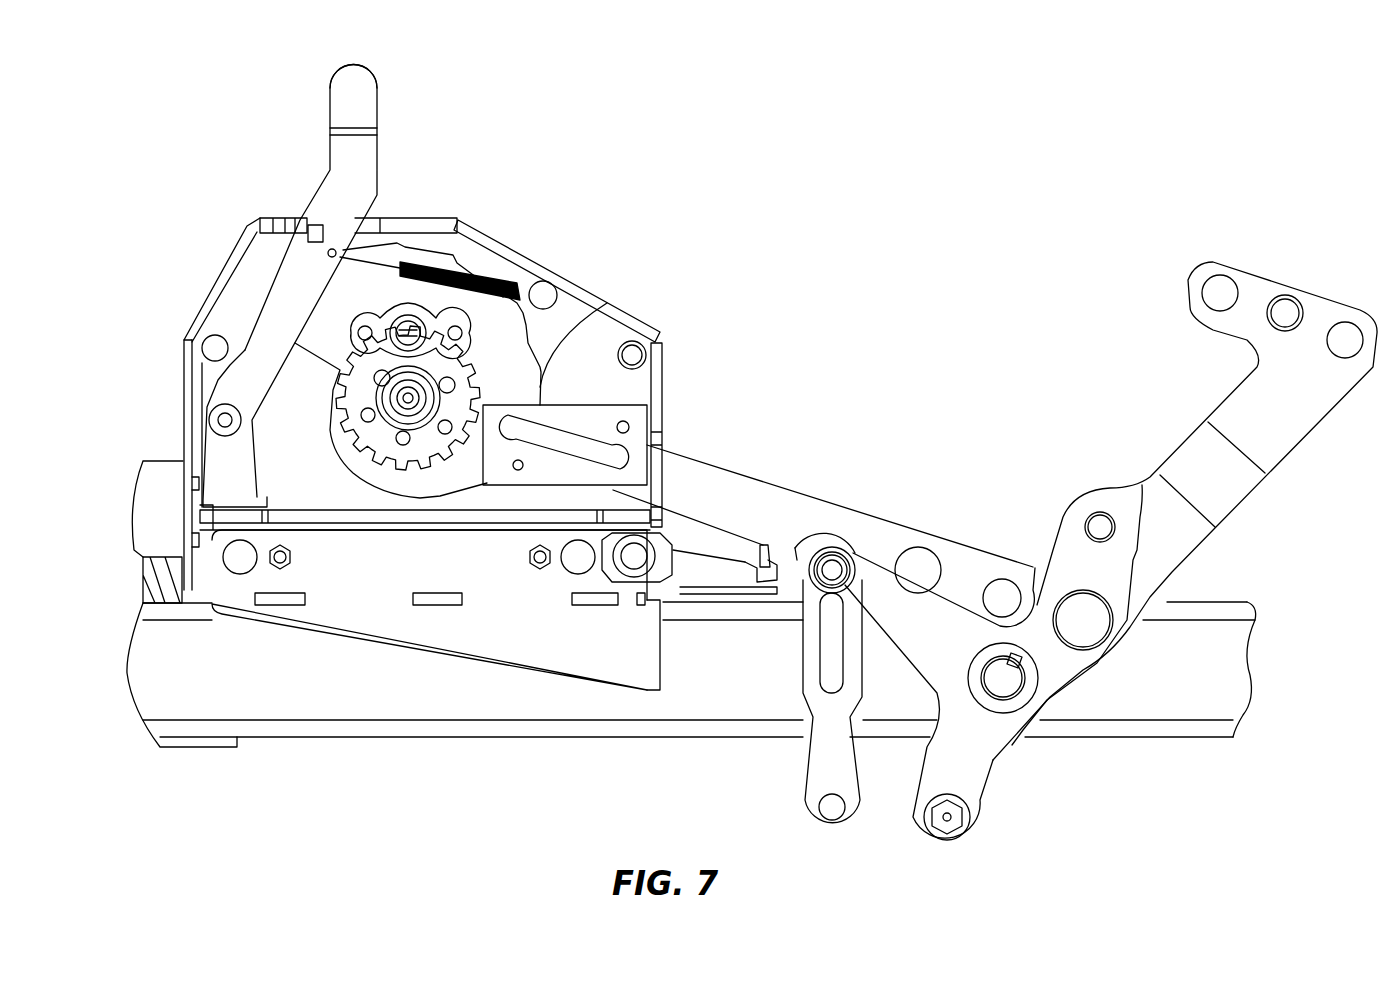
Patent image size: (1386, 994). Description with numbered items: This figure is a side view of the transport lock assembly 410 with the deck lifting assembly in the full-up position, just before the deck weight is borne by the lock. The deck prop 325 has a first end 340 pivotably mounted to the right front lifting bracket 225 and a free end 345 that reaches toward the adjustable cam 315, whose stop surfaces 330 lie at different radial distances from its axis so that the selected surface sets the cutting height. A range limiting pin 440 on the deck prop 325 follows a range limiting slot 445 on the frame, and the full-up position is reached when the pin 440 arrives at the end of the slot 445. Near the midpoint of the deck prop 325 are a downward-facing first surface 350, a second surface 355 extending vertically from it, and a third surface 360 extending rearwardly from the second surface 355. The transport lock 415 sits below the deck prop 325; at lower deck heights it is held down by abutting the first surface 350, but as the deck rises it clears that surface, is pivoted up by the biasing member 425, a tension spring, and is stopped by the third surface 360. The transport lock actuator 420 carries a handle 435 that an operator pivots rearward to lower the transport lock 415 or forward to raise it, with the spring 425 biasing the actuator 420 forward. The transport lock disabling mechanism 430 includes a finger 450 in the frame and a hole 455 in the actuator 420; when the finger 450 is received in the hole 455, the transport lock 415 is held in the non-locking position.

The transport lock assembly 410 is at (447, 93).
The transport lock actuator 420 is at (384, 184).
The handle 435 is at (337, 92).
The finger 450 is at (290, 217).
The transport lock disabling mechanism 430 is at (257, 202).
The hole 455 is at (313, 242).
The biasing member 425 is at (463, 270).
The stop surfaces 330 is at (567, 410).
The range limiting slot 445 is at (567, 422).
The range limiting pin 440 is at (623, 457).
The transport lock 415 is at (707, 567).
The third surface 360 is at (755, 595).
The deck prop 325 is at (877, 533).
The first end 340 is at (1033, 580).
The adjustable cam 315 is at (377, 477).
The free end 345 is at (575, 450).
The second surface 355 is at (770, 577).
The first surface 350 is at (793, 593).
The right front lifting bracket 225 is at (987, 747).